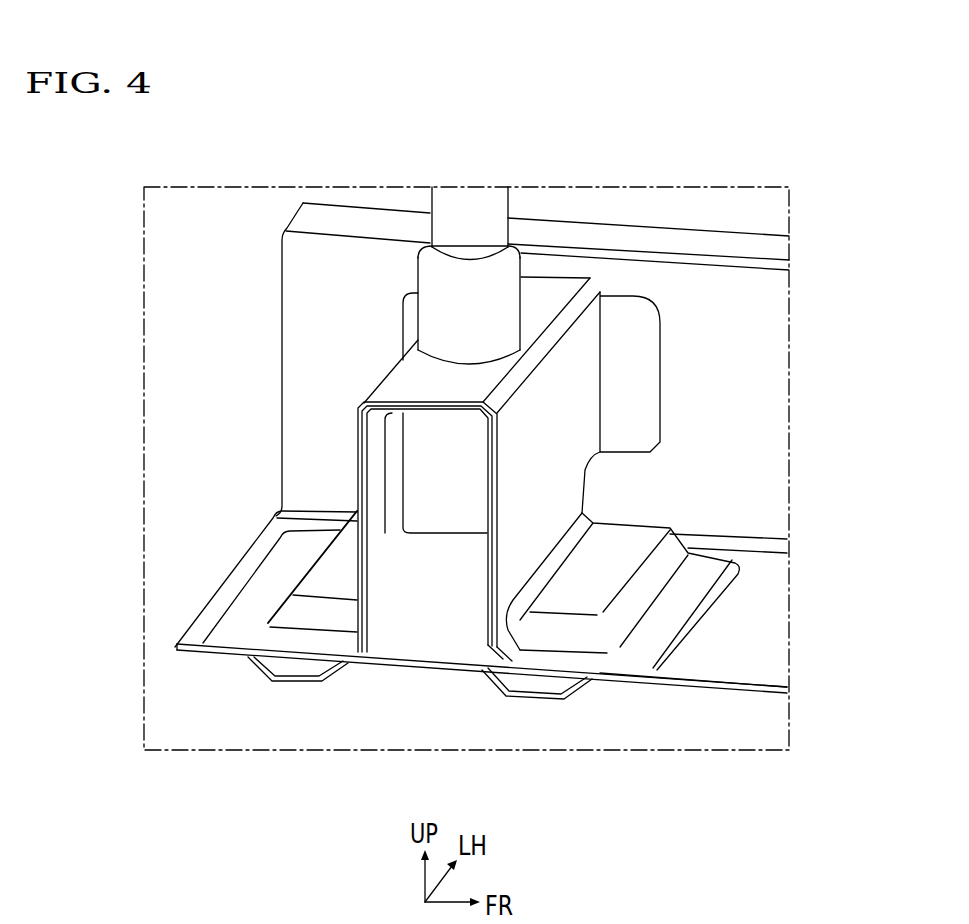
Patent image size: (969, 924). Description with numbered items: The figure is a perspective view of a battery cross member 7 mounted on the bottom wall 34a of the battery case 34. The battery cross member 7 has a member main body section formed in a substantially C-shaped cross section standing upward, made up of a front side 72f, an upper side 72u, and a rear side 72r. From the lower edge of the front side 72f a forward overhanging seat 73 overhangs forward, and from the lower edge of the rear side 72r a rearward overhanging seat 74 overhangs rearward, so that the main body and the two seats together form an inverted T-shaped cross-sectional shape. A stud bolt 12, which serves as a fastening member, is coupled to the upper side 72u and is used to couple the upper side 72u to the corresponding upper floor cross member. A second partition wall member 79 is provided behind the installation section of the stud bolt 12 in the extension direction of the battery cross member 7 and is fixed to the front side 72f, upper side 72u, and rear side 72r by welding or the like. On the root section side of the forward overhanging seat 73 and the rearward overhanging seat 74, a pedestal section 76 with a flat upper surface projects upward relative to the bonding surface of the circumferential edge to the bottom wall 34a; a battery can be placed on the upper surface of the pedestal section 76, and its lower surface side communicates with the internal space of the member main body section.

The battery cross member 7 is at (601, 297).
The stud bolt 12 is at (420, 291).
The upper side 72u is at (409, 388).
The rear side 72r is at (358, 487).
The front side 72f is at (540, 483).
The forward overhanging seat 73 is at (674, 594).
The rearward overhanging seat 74 is at (278, 577).
The pedestal section 76 is at (340, 597).
The second partition wall member 79 is at (273, 623).
The battery case 34 is at (746, 688).
The bottom wall 34a is at (687, 686).